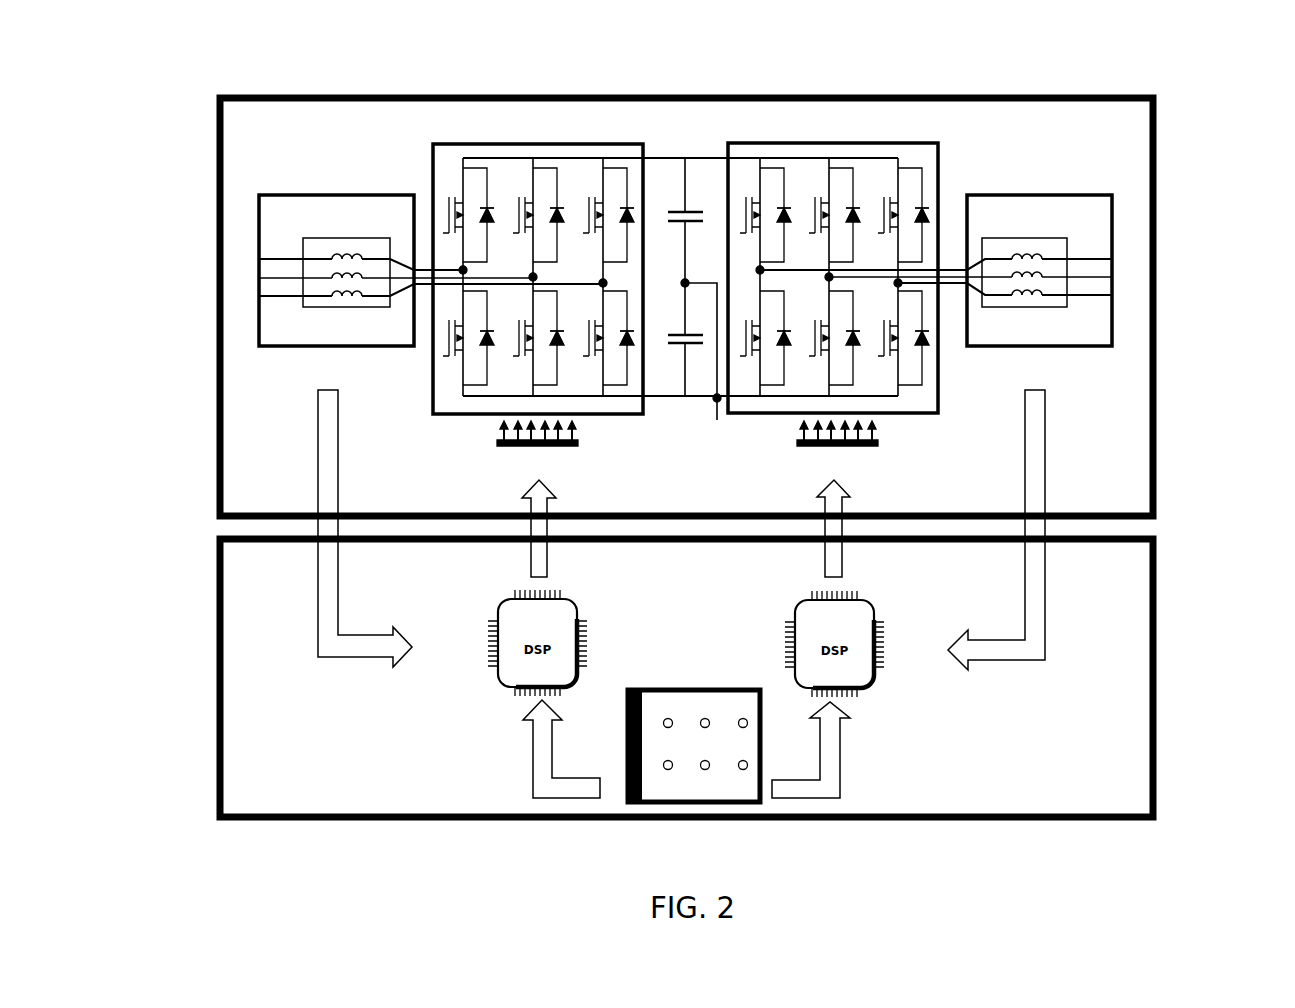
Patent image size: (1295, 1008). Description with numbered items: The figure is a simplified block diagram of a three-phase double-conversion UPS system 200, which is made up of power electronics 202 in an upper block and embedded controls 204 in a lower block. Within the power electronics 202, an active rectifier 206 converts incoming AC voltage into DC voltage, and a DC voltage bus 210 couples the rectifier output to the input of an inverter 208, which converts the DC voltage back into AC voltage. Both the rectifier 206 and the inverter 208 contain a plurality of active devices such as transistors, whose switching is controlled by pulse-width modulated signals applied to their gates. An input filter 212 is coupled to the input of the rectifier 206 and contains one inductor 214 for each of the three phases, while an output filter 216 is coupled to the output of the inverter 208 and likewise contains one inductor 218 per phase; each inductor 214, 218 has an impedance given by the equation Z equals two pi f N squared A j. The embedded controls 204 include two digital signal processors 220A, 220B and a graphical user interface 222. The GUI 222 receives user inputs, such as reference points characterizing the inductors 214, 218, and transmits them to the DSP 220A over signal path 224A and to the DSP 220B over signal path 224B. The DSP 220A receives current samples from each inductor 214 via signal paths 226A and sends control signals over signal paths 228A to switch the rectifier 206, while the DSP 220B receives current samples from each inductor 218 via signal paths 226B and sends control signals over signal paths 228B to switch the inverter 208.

The double-conversion UPS system 200 is at (175, 85).
The power electronics 202 is at (1157, 110).
The embedded controls 204 is at (1157, 595).
The active rectifier 206 is at (610, 143).
The inverter 208 is at (897, 143).
The direct current voltage bus 210 is at (677, 158).
The input filter 212 is at (258, 237).
The inductor 214 is at (345, 308).
The output filter 216 is at (1113, 230).
The inductor 218 is at (1030, 302).
The digital signal processor 220A is at (497, 683).
The digital signal processor 220B is at (872, 685).
The graphical user interface 222 is at (688, 690).
The signal path 224A is at (548, 790).
The signal path 224B is at (830, 787).
The signal path 226A is at (373, 647).
The signal path 226B is at (1002, 650).
The signal path 228A is at (531, 556).
The signal path 228B is at (843, 552).